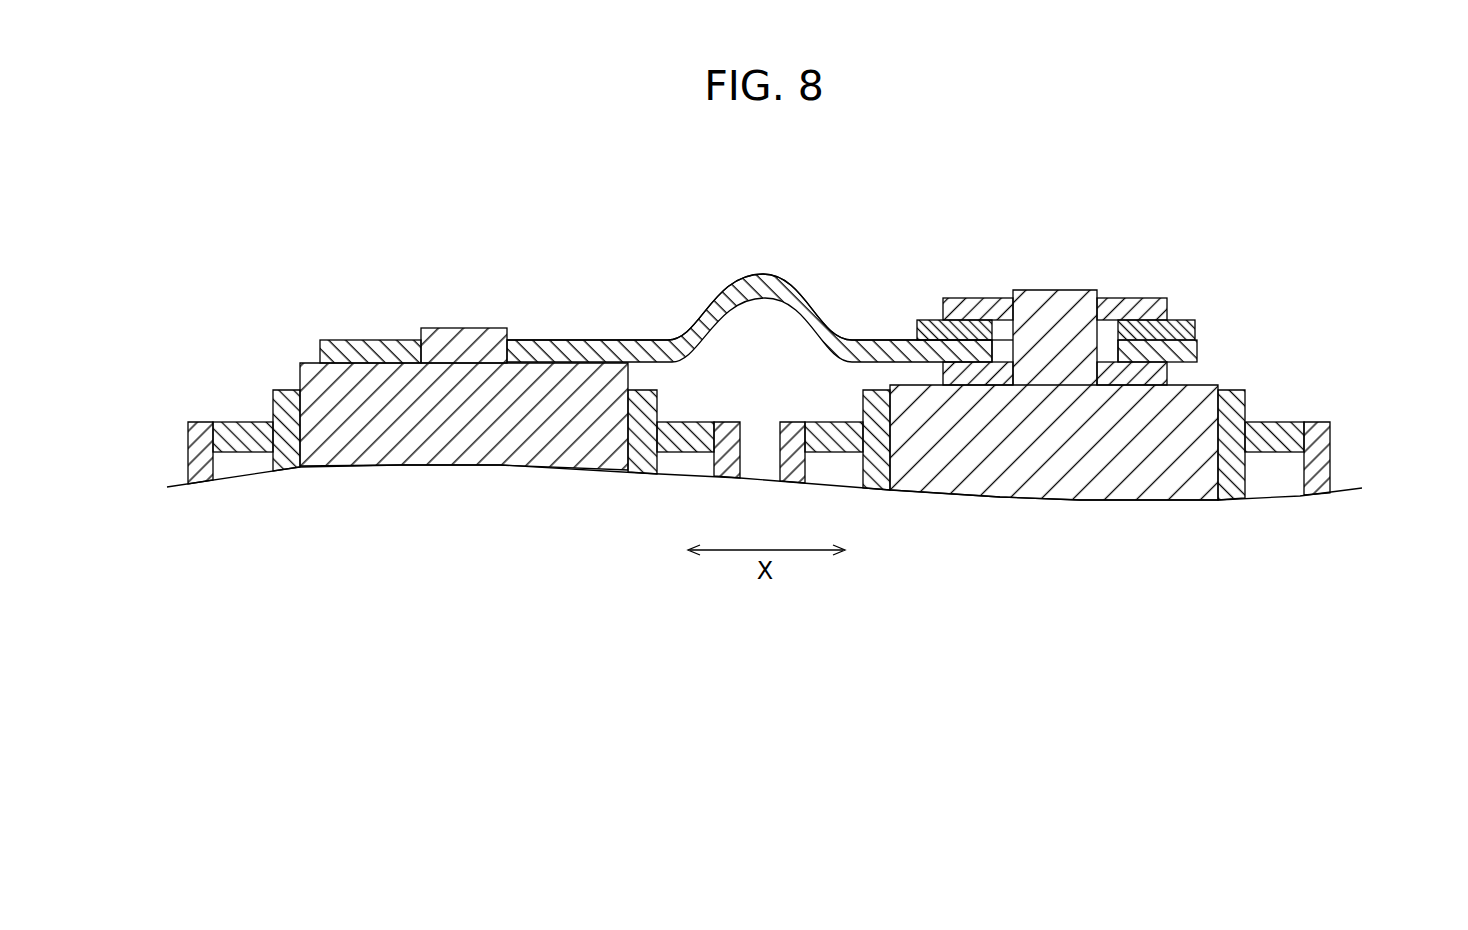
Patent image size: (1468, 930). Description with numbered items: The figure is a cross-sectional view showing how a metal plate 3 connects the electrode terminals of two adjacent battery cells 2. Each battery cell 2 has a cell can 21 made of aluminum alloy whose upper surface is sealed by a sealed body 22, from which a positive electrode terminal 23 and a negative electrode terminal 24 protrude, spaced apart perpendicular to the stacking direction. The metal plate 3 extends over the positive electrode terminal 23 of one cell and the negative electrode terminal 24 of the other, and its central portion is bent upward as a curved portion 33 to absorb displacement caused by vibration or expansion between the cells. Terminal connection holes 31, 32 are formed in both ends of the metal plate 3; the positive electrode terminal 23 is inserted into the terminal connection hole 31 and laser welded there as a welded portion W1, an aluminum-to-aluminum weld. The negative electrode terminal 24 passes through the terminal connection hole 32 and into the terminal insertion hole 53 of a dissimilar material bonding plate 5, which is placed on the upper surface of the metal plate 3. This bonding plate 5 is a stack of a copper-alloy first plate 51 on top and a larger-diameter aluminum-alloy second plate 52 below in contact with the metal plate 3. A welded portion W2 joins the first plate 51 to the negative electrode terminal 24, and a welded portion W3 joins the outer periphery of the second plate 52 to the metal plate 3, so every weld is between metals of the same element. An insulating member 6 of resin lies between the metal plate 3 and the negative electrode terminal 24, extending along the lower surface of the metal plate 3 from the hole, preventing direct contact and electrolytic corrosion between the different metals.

The battery cell 2 is at (774, 417).
The metal plate 3 is at (693, 241).
The dissimilar material bonding plate 5 is at (1085, 348).
The insulating member 6 is at (1168, 374).
The cell can 21 is at (188, 478).
The sealed body 22 is at (248, 422).
The positive electrode terminal 23 is at (466, 328).
The negative electrode terminal 24 is at (1055, 290).
The terminal connection hole 31 is at (420, 330).
The terminal connection hole 32 is at (1000, 353).
The curved portion 33 is at (770, 274).
The first plate 51 is at (1085, 279).
The second plate 52 is at (1195, 320).
The terminal insertion hole 53 is at (1102, 298).
The welded portion W1 is at (510, 340).
The welded portion W2 is at (1010, 298).
The welded portion W3 is at (900, 340).